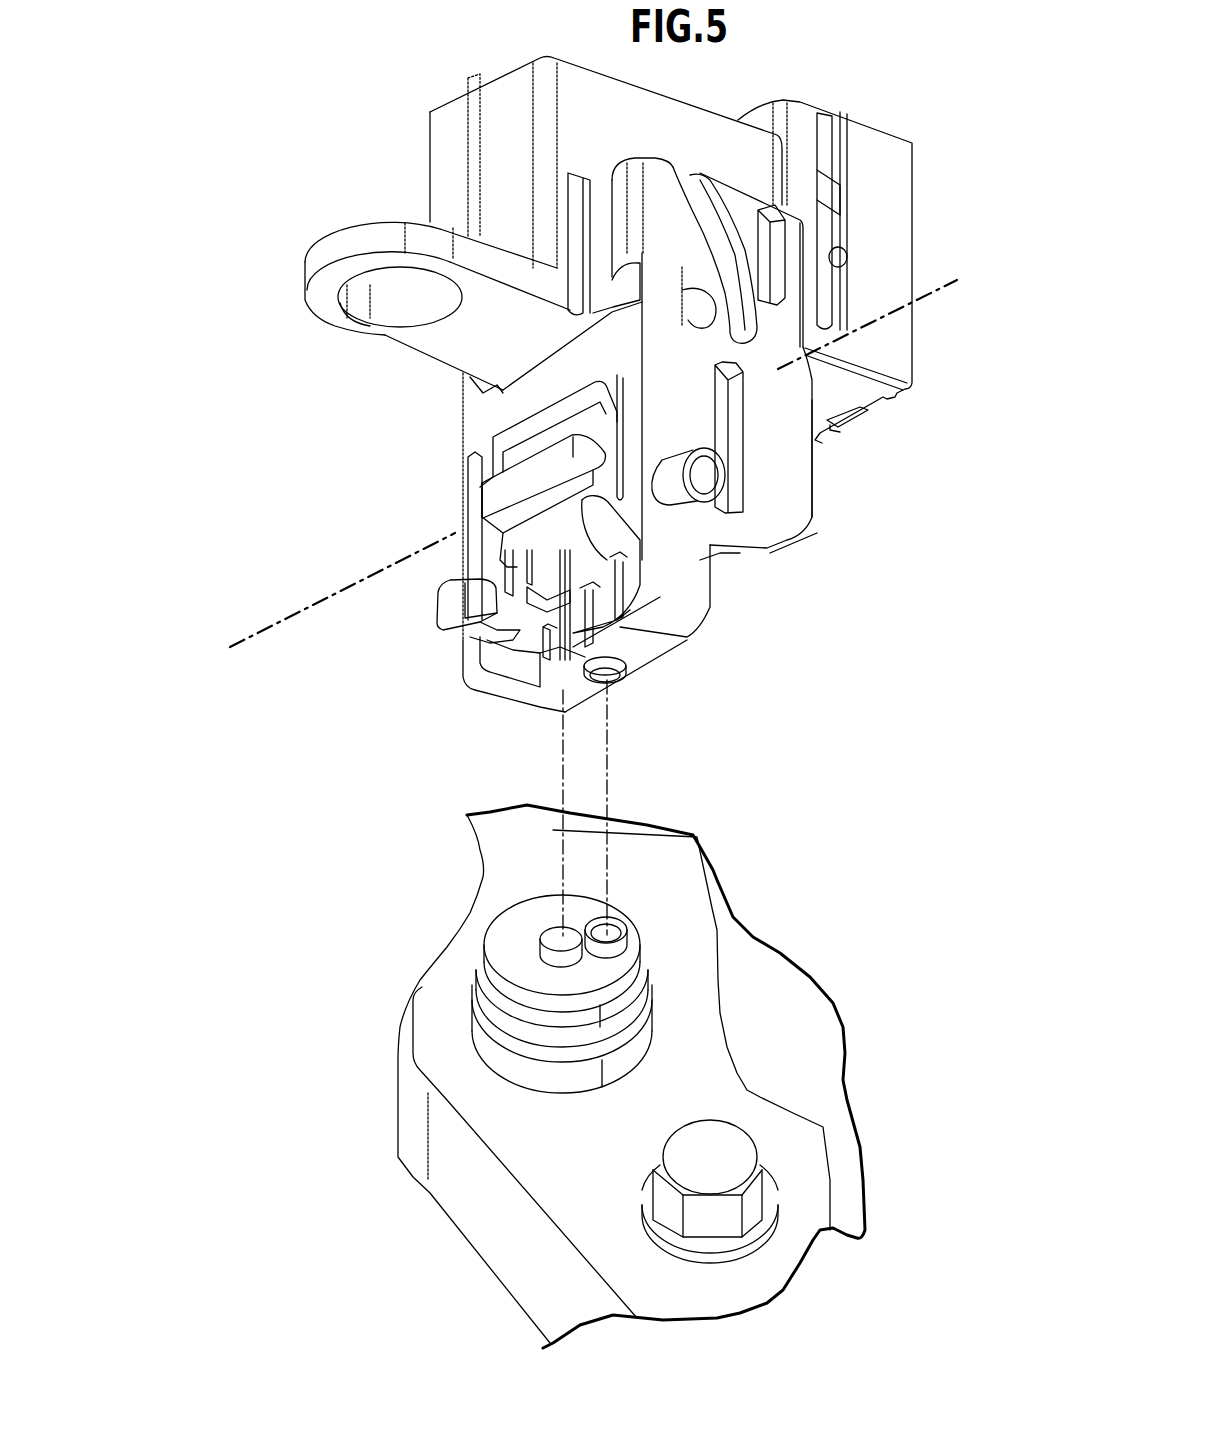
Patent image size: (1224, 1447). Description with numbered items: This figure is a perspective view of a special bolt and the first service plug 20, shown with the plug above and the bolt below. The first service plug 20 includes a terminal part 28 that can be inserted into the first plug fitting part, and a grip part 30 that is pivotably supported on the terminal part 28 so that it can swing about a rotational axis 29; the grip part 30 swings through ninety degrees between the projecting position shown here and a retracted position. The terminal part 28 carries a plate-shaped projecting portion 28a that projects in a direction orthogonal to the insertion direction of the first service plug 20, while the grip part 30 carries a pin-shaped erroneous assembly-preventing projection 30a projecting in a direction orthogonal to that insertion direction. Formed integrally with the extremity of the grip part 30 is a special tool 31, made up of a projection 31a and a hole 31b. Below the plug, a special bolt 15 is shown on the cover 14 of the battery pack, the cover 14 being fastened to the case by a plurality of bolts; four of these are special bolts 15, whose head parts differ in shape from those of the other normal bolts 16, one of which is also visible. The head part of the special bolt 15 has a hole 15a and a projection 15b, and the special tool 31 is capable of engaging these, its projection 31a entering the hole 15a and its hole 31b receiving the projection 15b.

The cover 14 is at (440, 1223).
The special bolt 15 is at (468, 1008).
The hole 15a is at (620, 937).
The projection 15b is at (553, 940).
The normal bolt 16 is at (728, 1135).
The first service plug 20 is at (601, 385).
The terminal part 28 is at (707, 380).
The plate-shaped projecting portion 28a is at (317, 258).
The rotational axis 29 is at (353, 584).
The grip part 30 is at (815, 527).
The erroneous assembly-preventing projection 30a is at (687, 503).
The special tool 31 is at (660, 785).
The projection 31a is at (612, 677).
The hole 31b is at (588, 658).